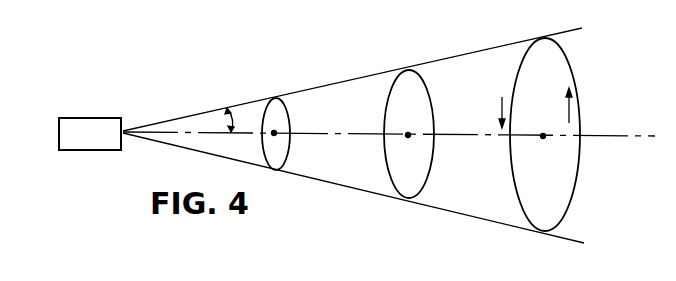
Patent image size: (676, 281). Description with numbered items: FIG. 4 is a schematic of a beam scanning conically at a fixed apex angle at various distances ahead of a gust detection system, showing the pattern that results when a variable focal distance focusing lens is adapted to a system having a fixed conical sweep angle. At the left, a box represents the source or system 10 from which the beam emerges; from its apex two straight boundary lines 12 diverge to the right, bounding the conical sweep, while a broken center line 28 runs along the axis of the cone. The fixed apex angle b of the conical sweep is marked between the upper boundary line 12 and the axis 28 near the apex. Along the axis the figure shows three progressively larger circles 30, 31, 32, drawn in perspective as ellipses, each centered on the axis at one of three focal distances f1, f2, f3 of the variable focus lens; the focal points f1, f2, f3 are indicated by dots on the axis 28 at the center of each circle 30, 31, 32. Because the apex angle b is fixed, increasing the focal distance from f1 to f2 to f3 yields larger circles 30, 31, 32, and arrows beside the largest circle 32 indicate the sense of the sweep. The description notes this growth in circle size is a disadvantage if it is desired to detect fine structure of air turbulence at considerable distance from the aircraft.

The light source 10 is at (83, 150).
The light beam boundary 12 is at (363, 75).
The beam axis 28 is at (486, 133).
The circle 30 is at (296, 84).
The circle 31 is at (427, 82).
The circle 32 is at (563, 48).
The fixed apex angle b is at (223, 120).
The focal distance f1 is at (274, 133).
The focal distance f2 is at (408, 135).
The focal distance f3 is at (543, 136).